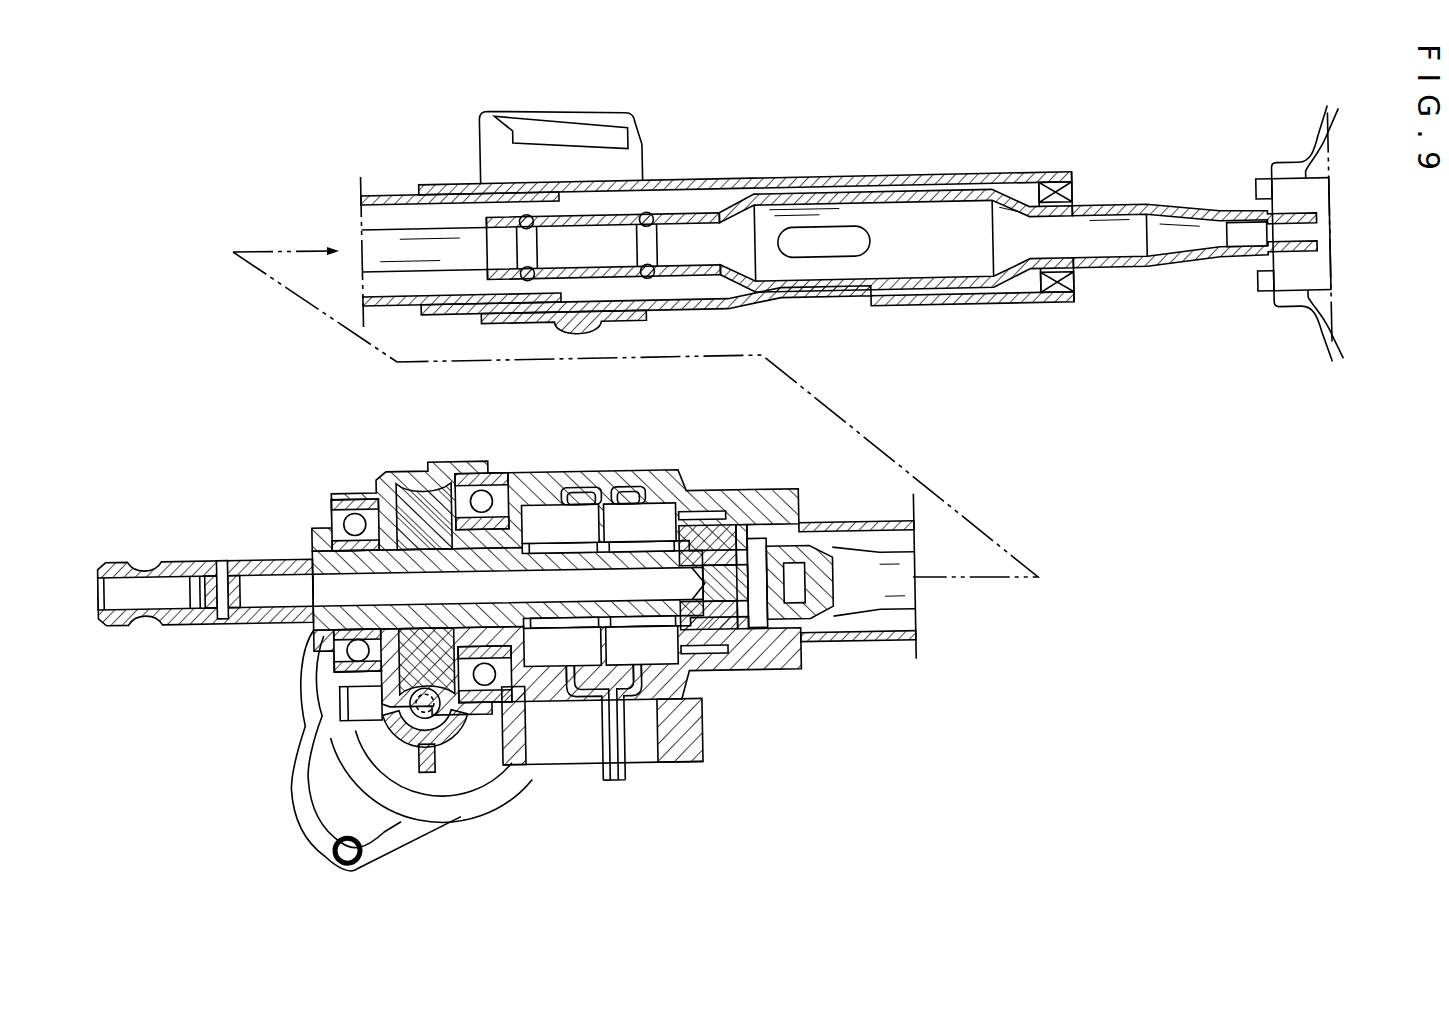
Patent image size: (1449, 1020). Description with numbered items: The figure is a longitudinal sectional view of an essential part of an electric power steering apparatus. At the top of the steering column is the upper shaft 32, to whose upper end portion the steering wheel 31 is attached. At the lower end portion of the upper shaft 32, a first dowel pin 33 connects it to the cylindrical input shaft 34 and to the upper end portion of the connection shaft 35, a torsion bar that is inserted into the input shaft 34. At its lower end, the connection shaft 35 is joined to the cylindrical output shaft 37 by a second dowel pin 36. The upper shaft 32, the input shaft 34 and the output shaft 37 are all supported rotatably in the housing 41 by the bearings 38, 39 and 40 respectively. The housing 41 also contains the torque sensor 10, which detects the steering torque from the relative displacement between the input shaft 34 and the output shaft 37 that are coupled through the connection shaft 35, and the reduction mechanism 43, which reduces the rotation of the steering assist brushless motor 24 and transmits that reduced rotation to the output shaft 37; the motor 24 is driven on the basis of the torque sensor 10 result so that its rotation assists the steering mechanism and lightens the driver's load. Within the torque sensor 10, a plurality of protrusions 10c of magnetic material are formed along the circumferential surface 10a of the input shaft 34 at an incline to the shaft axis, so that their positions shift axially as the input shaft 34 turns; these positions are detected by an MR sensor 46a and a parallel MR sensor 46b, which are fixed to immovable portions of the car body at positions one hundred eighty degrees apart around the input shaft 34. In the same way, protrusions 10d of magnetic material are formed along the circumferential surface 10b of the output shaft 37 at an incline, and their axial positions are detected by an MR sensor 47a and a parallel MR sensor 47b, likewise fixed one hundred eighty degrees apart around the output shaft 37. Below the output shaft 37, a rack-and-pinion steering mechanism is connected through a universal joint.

The torque sensor 10 is at (635, 726).
The circumferential surface of the input shaft 10a is at (647, 550).
The circumferential surface of the output shaft 10b is at (573, 516).
The protrusions made of magnetic material 10c is at (700, 684).
The protrusions made of magnetic material 10d is at (560, 690).
The steering assist brushless motor 24 is at (325, 742).
The steering wheel 31 is at (1305, 352).
The upper shaft 32 is at (392, 230).
The first dowel pin 33 is at (863, 637).
The cylindrical input shaft 34 is at (808, 512).
The connection shaft 35 is at (270, 576).
The second dowel pin 36 is at (223, 582).
The cylindrical output shaft 37 is at (297, 560).
The bearing 38 is at (1052, 306).
The bearing 39 is at (473, 470).
The bearing 40 is at (347, 505).
The housing 41 is at (950, 312).
The reduction mechanism 43 is at (395, 702).
The MR sensor 46a is at (680, 762).
The MR sensor 46b is at (630, 512).
The MR sensor 47a is at (550, 700).
The MR sensor 47b is at (588, 512).